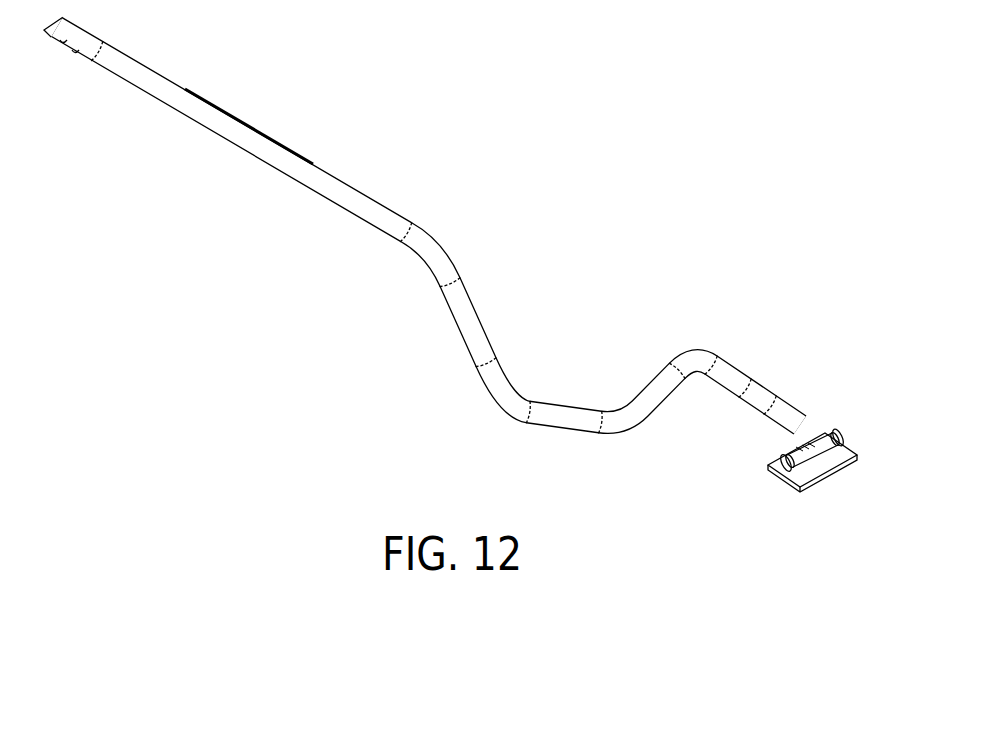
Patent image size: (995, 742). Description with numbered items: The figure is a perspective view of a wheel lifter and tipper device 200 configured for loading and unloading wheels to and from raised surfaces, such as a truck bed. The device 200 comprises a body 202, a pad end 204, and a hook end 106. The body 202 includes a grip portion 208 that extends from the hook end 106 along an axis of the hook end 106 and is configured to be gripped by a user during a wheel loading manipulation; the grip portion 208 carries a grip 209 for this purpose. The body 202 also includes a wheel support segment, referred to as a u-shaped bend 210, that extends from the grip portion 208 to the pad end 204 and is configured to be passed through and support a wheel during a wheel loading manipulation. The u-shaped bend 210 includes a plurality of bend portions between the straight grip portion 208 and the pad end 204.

The wheel lifter and tipper device 200 is at (466, 254).
The body 202 is at (380, 207).
The pad end 204 is at (827, 421).
The grip portion 208 is at (205, 150).
The grip 209 is at (250, 127).
The u-shaped bend 210 is at (573, 313).
The hook end 106 is at (63, 63).